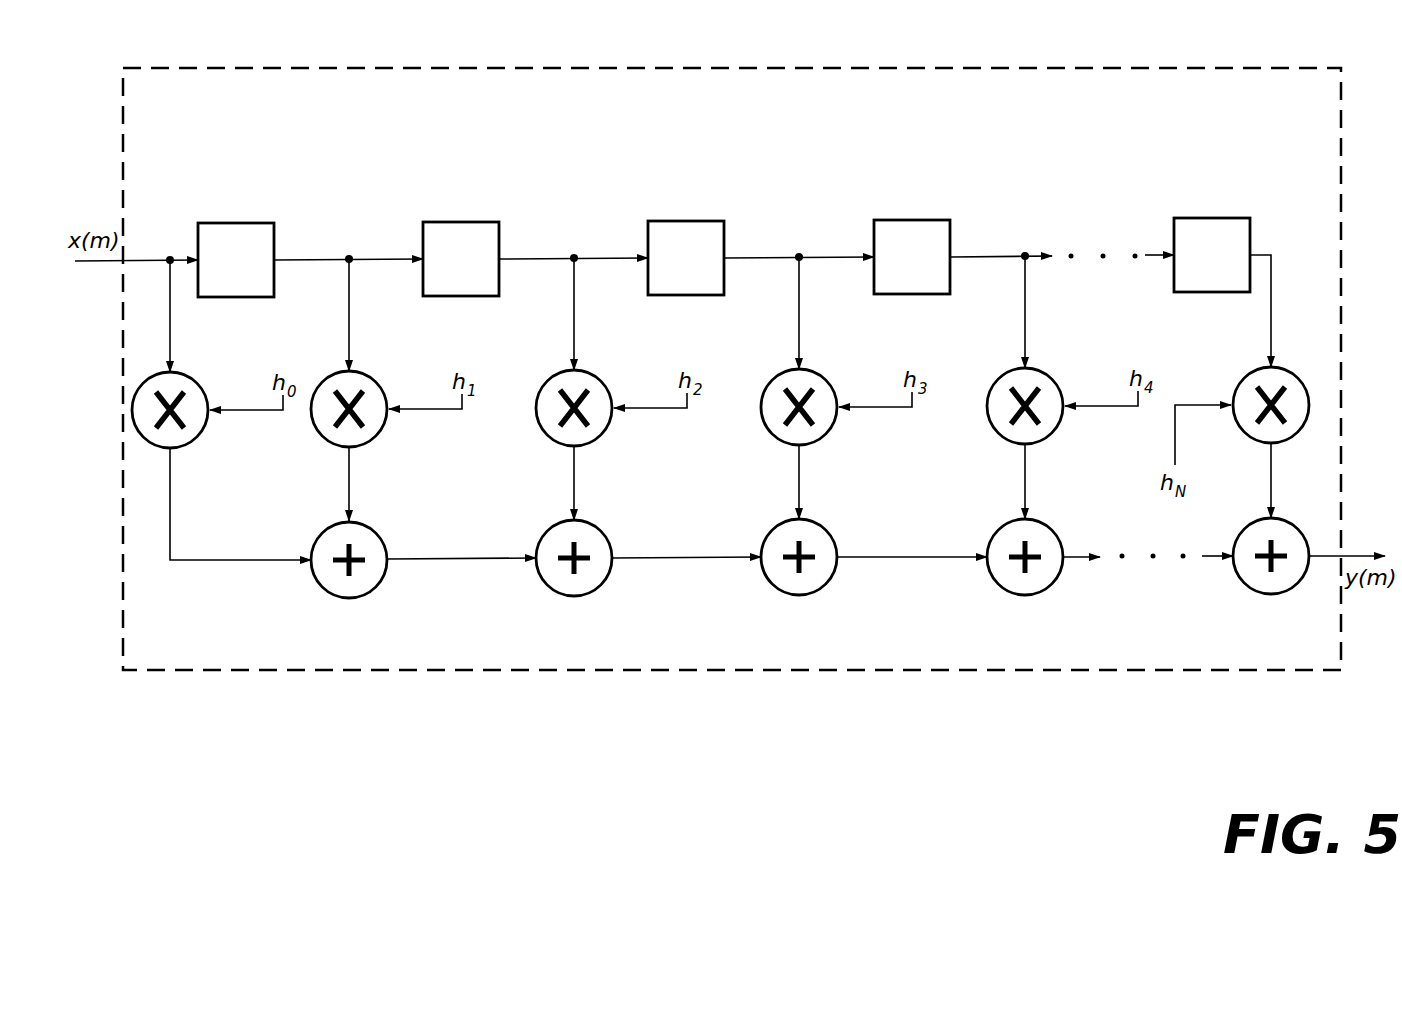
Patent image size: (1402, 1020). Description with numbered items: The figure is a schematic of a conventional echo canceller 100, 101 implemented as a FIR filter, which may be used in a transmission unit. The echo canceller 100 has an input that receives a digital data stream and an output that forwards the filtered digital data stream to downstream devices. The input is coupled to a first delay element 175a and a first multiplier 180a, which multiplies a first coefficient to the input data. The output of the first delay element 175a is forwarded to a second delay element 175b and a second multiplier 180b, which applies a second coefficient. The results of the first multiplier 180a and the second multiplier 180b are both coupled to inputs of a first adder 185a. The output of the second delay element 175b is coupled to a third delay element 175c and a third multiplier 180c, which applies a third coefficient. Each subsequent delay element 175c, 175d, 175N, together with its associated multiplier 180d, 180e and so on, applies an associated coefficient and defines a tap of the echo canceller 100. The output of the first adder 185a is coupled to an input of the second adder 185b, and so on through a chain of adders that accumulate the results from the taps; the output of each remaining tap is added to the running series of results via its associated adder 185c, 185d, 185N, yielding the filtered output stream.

The echo canceller 100 is at (732, 470).
The echo canceller 101 is at (732, 369).
The first delay element 175a is at (230, 223).
The second delay element 175b is at (455, 222).
The third delay element 175c is at (680, 221).
The delay element 175d is at (906, 220).
The delay element 175N is at (1190, 218).
The first multiplier 180a is at (197, 383).
The second multiplier 180b is at (376, 382).
The third multiplier 180c is at (601, 381).
The multiplier 180d is at (826, 380).
The multiplier 180e is at (1052, 379).
The first adder 185a is at (376, 532).
The second adder 185b is at (601, 530).
The adder 185c is at (826, 529).
The adder 185d is at (1052, 530).
The adder 185N is at (1249, 584).